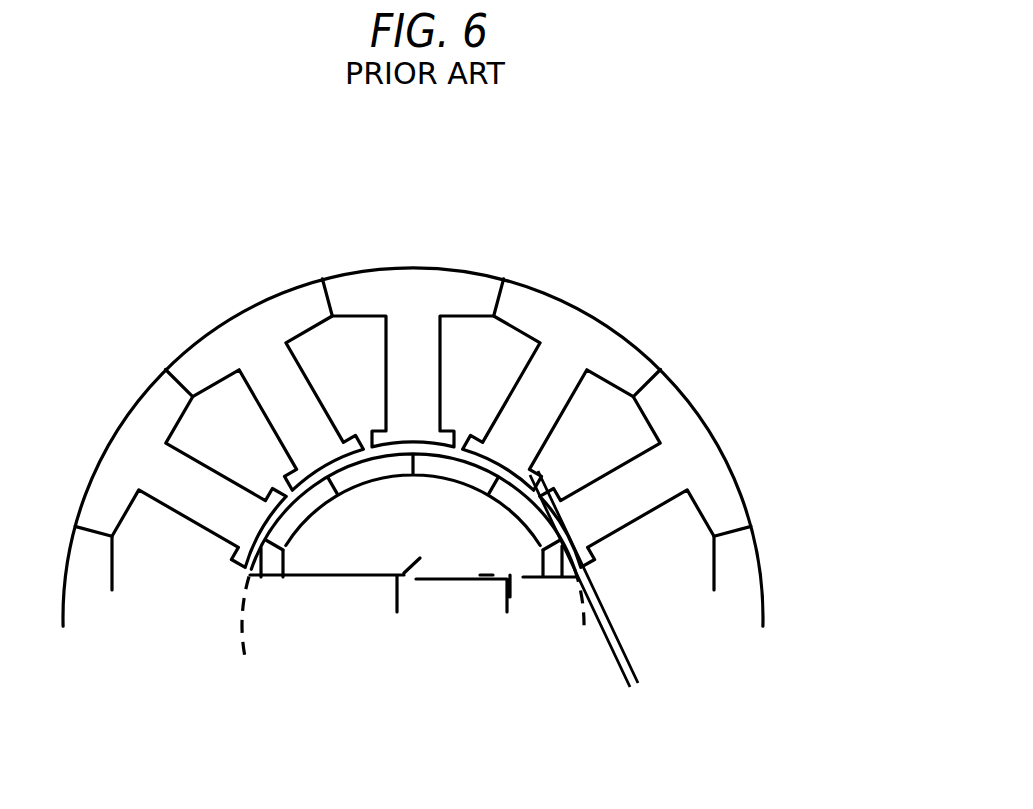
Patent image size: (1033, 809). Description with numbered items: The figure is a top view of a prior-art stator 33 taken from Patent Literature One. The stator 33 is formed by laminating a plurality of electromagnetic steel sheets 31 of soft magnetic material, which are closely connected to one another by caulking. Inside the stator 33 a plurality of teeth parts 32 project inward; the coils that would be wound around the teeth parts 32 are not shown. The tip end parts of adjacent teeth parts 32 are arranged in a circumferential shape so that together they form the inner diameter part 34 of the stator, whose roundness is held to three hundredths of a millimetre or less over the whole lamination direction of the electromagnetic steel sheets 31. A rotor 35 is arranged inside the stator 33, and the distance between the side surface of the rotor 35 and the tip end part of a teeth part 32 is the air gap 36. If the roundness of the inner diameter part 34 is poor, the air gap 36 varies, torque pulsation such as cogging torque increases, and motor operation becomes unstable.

The electromagnetic steel sheet 31 is at (575, 348).
The teeth part 32 is at (620, 490).
The stator 33 is at (383, 182).
The inner diameter part 34 is at (240, 632).
The rotor 35 is at (440, 557).
The air gap 36 is at (637, 660).